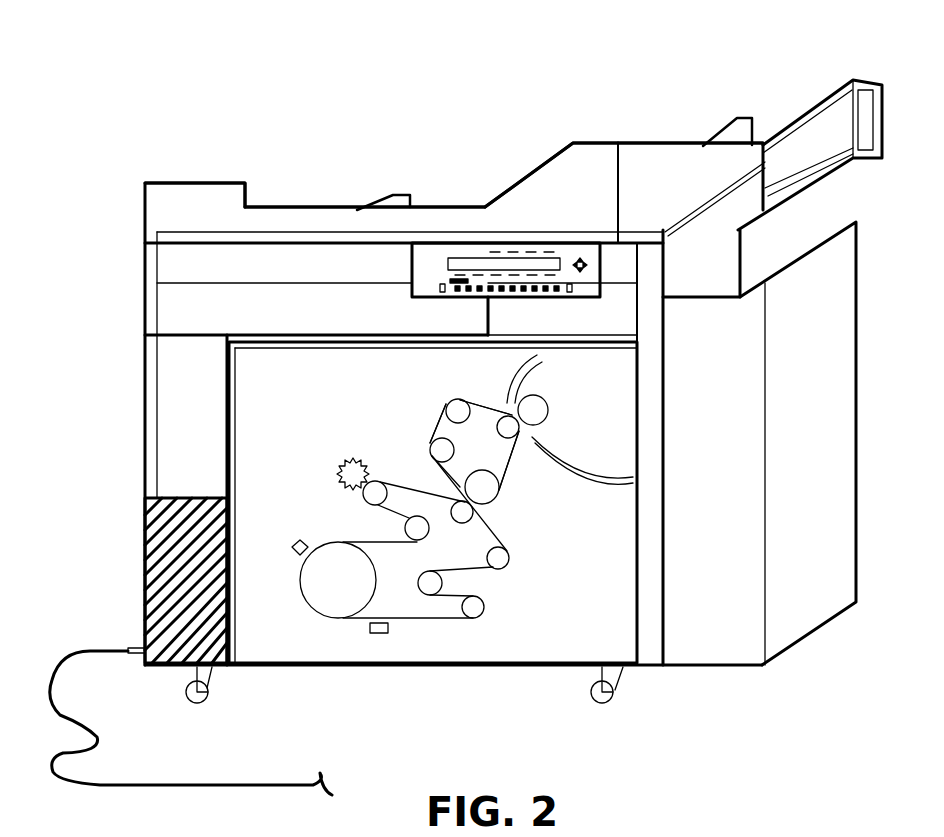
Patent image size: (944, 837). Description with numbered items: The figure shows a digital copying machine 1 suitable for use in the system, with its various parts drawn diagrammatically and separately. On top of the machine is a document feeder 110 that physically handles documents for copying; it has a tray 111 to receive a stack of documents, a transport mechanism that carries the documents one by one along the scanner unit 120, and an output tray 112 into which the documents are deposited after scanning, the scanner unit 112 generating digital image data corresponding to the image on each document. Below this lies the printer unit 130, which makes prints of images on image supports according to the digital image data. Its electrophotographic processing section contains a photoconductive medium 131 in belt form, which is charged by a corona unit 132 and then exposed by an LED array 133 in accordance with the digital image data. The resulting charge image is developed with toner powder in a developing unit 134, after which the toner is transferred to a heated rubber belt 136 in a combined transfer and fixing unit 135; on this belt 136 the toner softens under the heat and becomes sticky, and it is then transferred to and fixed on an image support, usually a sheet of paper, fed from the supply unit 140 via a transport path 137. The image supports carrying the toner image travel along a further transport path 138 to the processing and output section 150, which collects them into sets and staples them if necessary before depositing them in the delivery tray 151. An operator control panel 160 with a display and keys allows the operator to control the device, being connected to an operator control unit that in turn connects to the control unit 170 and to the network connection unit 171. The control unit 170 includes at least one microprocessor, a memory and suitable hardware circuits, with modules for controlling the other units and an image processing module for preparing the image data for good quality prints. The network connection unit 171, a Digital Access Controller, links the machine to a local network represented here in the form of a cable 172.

The digital copying machine 1 is at (422, 95).
The document feeder 110 is at (190, 183).
The tray 111 is at (280, 207).
The scanner unit 112 is at (534, 170).
The scanner unit 120 is at (145, 315).
The printer unit 130 is at (325, 670).
The photoconductive medium 131 is at (448, 618).
The corona unit 132 is at (377, 633).
The LED array 133 is at (295, 546).
The developing unit 134 is at (340, 480).
The combined transfer and fixing unit 135 is at (406, 418).
The heated rubber belt 136 is at (517, 457).
The transport path 137 is at (600, 472).
The transport path 138 is at (523, 363).
The supply unit 140 is at (835, 622).
The processing and output section 150 is at (640, 143).
The delivery tray 151 is at (830, 100).
The operator control panel 160 is at (443, 243).
The control unit 170 is at (145, 423).
The network connection unit 171 is at (145, 590).
The cable 172 is at (262, 783).